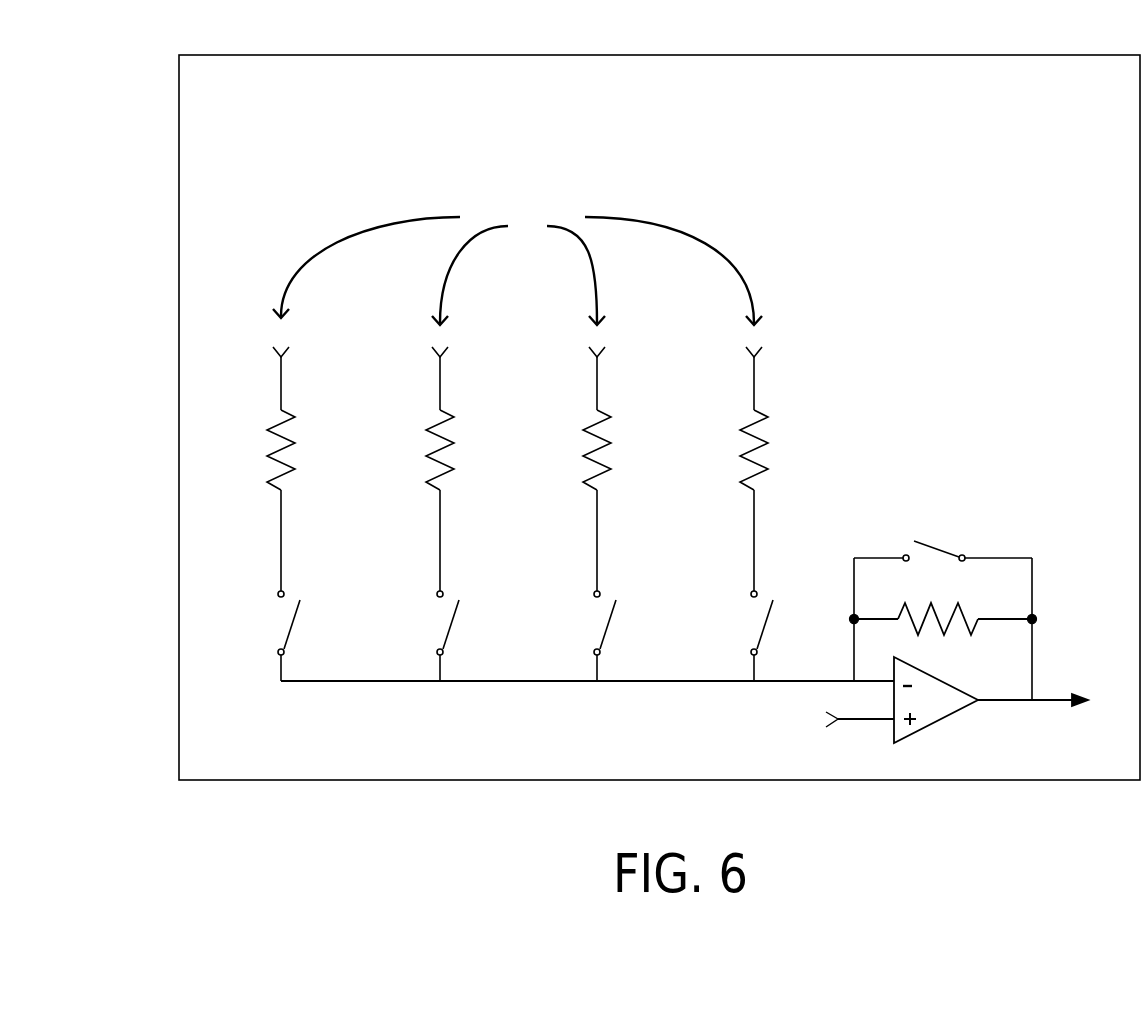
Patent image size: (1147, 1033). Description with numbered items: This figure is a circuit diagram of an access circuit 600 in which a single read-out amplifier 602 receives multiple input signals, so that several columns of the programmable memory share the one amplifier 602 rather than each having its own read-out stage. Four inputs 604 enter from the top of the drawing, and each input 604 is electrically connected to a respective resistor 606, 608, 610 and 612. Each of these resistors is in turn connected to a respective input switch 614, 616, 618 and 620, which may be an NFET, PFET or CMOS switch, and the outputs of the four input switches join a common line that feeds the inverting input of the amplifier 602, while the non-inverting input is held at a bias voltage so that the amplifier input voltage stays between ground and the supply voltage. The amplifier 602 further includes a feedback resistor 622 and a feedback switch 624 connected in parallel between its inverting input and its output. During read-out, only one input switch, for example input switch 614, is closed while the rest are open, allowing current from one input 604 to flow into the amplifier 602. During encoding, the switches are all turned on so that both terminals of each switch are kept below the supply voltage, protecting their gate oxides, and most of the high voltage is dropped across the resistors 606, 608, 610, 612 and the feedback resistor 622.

The access circuit 600 is at (1074, 120).
The amplifier 602 is at (945, 722).
The inputs 604 is at (517, 303).
The resistor 606 is at (313, 451).
The resistor 608 is at (468, 448).
The resistor 610 is at (626, 448).
The resistor 612 is at (784, 448).
The input switch 614 is at (303, 591).
The input switch 616 is at (462, 591).
The input switch 618 is at (627, 591).
The input switch 620 is at (775, 585).
The feedback resistor 622 is at (933, 599).
The feedback switch 624 is at (933, 539).